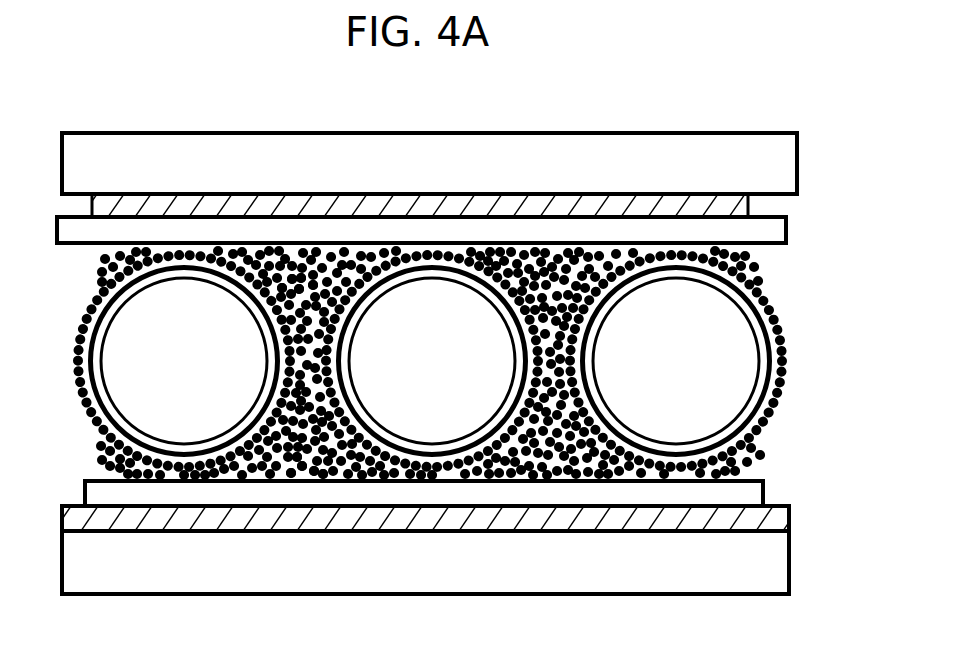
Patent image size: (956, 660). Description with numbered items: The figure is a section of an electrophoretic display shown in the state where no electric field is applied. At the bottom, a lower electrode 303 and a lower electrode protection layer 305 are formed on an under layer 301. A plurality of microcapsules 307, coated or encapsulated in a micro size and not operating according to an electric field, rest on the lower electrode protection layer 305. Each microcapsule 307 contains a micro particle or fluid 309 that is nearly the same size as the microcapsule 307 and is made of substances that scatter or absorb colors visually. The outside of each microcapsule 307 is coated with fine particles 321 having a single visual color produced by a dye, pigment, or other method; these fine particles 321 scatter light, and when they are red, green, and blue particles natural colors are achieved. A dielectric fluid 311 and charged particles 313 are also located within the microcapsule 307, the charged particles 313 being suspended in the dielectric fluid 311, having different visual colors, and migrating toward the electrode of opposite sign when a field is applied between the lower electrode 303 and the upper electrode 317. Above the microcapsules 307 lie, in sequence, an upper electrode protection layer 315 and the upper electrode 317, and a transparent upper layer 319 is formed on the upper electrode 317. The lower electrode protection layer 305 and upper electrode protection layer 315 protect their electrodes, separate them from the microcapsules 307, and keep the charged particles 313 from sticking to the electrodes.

The under layer 301 is at (772, 564).
The lower electrode 303 is at (775, 513).
The lower electrode protection layer 305 is at (748, 493).
The microcapsule 307 is at (788, 374).
The micro particle or fluid 309 is at (737, 344).
The dielectric fluid 311 is at (305, 477).
The charged particle 313 is at (297, 283).
The upper electrode protection layer 315 is at (772, 228).
The upper electrode 317 is at (733, 205).
The transparent upper layer 319 is at (772, 151).
The fine particles 321 is at (780, 316).